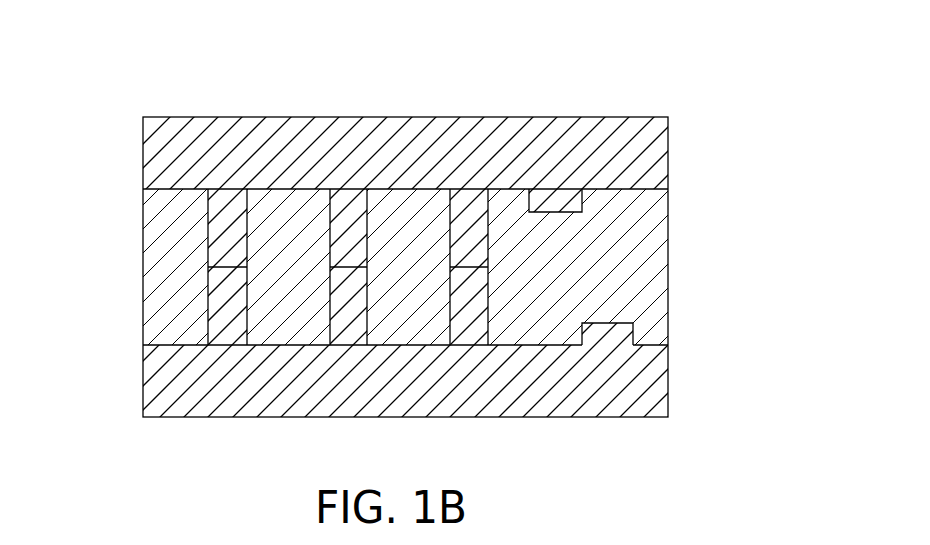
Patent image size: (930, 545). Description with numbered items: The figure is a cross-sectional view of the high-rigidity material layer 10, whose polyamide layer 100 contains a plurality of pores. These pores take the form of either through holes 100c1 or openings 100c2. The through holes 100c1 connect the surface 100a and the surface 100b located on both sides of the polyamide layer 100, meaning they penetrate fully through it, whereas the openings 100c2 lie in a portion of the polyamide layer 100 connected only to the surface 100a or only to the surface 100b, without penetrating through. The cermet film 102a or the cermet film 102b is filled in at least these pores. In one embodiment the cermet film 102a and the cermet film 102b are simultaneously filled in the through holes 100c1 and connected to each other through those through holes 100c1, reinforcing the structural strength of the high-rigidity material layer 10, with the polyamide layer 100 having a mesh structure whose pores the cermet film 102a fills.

The high-rigidity material layer 10 is at (93, 60).
The polyamide layer 100 is at (660, 263).
The surface 100a is at (173, 347).
The surface 100b is at (173, 188).
The through holes 100c1 is at (230, 189).
The openings 100c2 is at (557, 189).
The cermet film 102a is at (658, 390).
The cermet film 102b is at (647, 162).